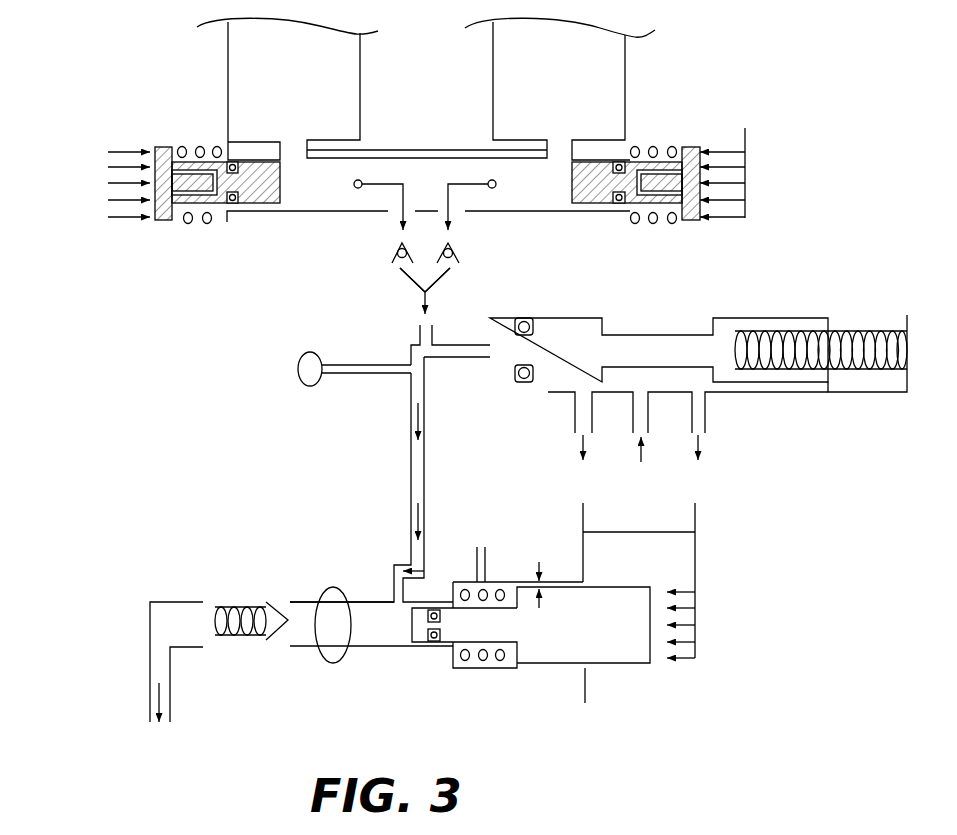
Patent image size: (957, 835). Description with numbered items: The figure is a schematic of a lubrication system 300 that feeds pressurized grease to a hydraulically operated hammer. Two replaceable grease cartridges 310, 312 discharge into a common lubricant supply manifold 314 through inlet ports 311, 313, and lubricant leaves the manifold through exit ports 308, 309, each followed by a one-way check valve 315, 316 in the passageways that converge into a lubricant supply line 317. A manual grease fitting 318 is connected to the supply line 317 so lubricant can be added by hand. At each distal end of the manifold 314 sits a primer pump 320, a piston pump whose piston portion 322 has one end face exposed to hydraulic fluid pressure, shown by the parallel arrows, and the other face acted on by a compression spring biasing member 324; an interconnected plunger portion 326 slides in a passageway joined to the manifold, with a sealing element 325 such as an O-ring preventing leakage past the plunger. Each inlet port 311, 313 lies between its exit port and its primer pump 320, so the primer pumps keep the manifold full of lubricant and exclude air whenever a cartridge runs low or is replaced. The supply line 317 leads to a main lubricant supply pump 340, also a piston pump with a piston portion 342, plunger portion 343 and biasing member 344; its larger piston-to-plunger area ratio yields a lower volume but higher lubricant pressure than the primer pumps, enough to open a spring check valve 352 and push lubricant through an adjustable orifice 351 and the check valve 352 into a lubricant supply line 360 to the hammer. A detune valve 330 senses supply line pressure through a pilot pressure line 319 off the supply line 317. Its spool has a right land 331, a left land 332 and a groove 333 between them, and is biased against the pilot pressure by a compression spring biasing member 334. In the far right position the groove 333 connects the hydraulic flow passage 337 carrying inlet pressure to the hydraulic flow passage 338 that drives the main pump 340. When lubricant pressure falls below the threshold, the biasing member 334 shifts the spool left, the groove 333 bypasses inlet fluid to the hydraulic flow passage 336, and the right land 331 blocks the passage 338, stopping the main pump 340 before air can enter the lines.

The lubrication system 300 is at (868, 148).
The exit port 308 is at (397, 203).
The exit port 309 is at (458, 203).
The grease cartridge 310 is at (233, 50).
The inlet port 311 is at (303, 150).
The grease cartridge 312 is at (508, 55).
The inlet port 313 is at (547, 150).
The common lubricant supply manifold 314 is at (327, 211).
The one-way check valve 315 is at (392, 253).
The one-way check valve 316 is at (460, 255).
The lubricant supply line 317 is at (425, 463).
The manual grease fitting 318 is at (312, 350).
The pilot pressure line 319 is at (460, 345).
The primer pump 320 is at (62, 222).
The piston portion 322 is at (160, 213).
The biasing member 324 is at (200, 147).
The sealing element 325 is at (233, 203).
The plunger portion 326 is at (273, 197).
The detune valve 330 is at (696, 373).
The right land 331 is at (775, 330).
The left land 332 is at (507, 372).
The groove 333 is at (697, 333).
The biasing member 334 is at (883, 330).
The hydraulic flow passage 336 is at (573, 420).
The hydraulic flow passage 337 is at (650, 424).
The hydraulic flow passage 338 is at (707, 417).
The main lubricant supply pump 340 is at (553, 648).
The piston portion 342 is at (540, 652).
The plunger portion 343 is at (450, 641).
The biasing member 344 is at (482, 661).
The adjustable orifice 351 is at (333, 587).
The spring check valve 352 is at (282, 610).
The lubricant supply line 360 is at (160, 622).